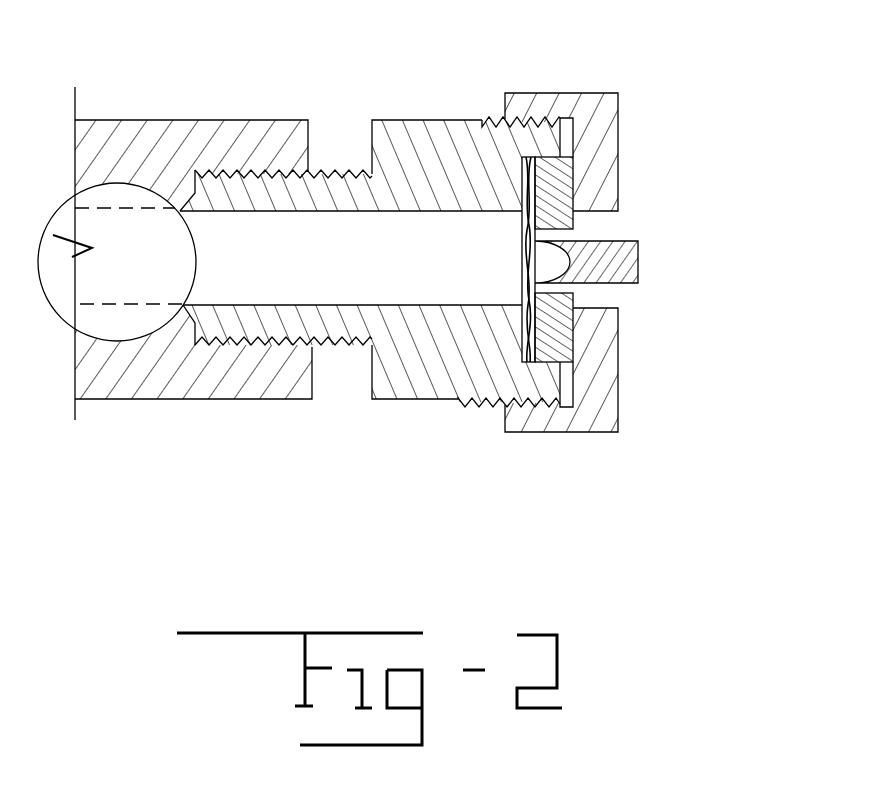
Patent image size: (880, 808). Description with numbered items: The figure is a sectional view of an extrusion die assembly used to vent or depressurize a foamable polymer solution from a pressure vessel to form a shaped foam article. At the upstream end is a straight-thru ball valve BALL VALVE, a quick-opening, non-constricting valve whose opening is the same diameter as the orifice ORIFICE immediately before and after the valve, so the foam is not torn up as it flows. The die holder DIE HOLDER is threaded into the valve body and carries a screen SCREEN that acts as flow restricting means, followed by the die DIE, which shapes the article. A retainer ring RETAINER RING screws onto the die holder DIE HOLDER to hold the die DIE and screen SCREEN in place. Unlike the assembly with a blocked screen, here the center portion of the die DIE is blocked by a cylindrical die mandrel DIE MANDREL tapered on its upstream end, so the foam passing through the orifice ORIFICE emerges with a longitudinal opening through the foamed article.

The ball valve BALL VALVE is at (148, 357).
The die holder DIE HOLDER is at (462, 367).
The retainer ring RETAINER RING is at (528, 107).
The die DIE is at (557, 192).
The die mandrel DIE MANDREL is at (602, 248).
The screen SCREEN is at (522, 176).
The orifice ORIFICE is at (563, 288).